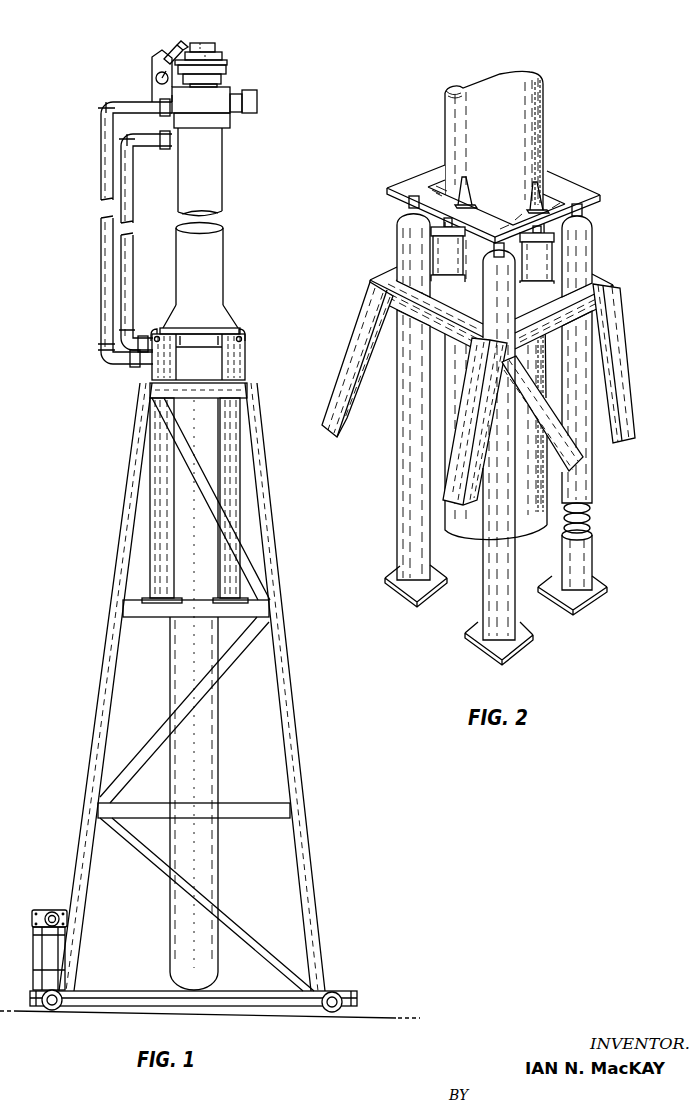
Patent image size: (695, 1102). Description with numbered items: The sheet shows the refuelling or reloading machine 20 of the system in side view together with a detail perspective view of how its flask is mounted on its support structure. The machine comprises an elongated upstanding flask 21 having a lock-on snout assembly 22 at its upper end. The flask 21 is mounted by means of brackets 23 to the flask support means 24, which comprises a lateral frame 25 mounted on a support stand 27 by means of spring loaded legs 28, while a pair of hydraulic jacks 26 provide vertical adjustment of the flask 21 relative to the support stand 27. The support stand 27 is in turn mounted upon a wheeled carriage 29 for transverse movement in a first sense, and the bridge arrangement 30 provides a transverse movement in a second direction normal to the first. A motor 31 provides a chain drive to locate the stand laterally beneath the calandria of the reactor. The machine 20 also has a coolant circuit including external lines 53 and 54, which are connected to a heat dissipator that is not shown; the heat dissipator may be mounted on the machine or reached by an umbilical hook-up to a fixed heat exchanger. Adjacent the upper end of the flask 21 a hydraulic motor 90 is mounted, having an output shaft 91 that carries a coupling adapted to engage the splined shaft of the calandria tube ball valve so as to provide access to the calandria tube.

In FIG. 1, the refuelling machine 20 is at (106, 486).
In FIG. 1, the flask 21 is at (223, 193).
In FIG. 2, the flask 21 is at (445, 112).
In FIG. 1, the lock-on snout assembly 22 is at (251, 62).
In FIG. 1, the brackets 23 is at (230, 311).
In FIG. 2, the brackets 23 is at (533, 186).
In FIG. 1, the flask support means 24 is at (323, 688).
In FIG. 2, the flask support means 24 is at (614, 270).
In FIG. 1, the lateral frame 25 is at (240, 334).
In FIG. 1, the hydraulic jacks 26 is at (247, 343).
In FIG. 2, the hydraulic jacks 26 is at (438, 253).
In FIG. 1, the support stand 27 is at (264, 401).
In FIG. 1, the spring loaded legs 28 is at (236, 507).
In FIG. 2, the spring loaded legs 28 is at (592, 243).
In FIG. 1, the wheeled carriage 29 is at (343, 978).
In FIG. 1, the bridge arrangement 30 is at (377, 1016).
In FIG. 1, the motor 31 is at (52, 911).
In FIG. 1, the external line 53 is at (130, 267).
In FIG. 1, the external line 54 is at (103, 282).
In FIG. 1, the hydraulic motor 90 is at (152, 68).
In FIG. 1, the output shaft 91 is at (167, 62).